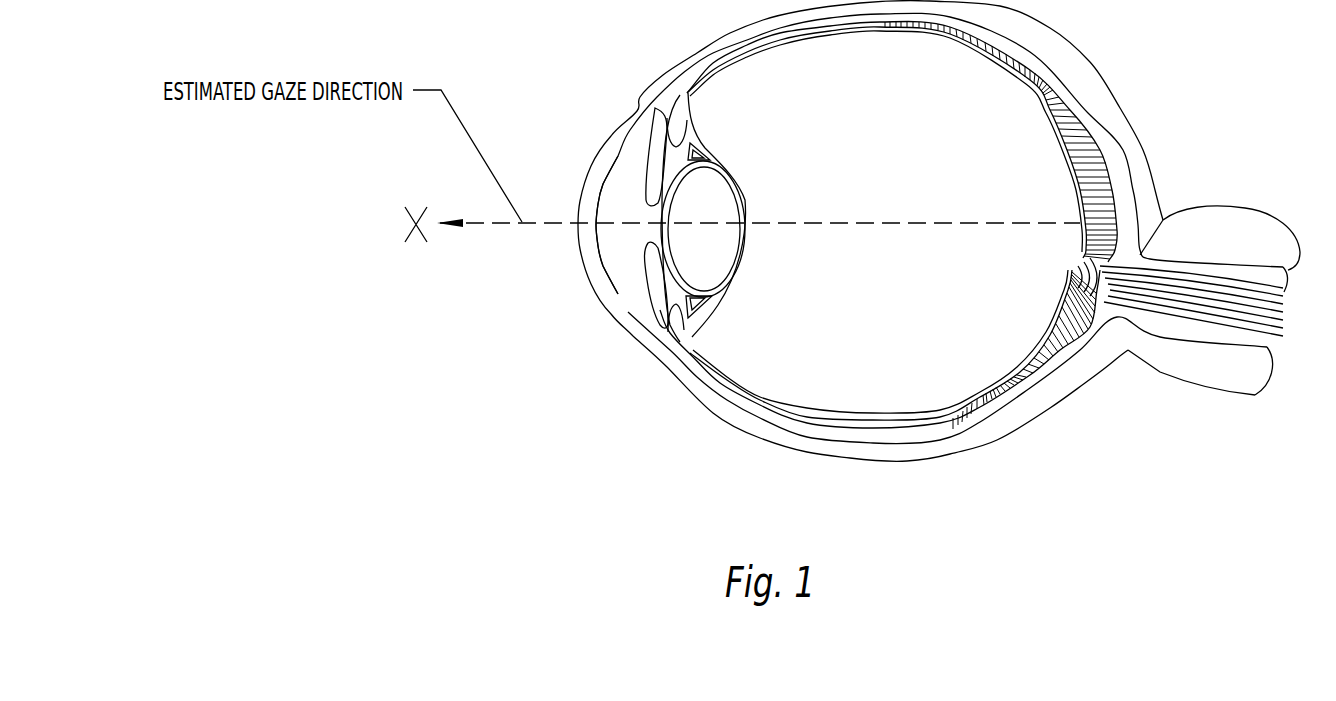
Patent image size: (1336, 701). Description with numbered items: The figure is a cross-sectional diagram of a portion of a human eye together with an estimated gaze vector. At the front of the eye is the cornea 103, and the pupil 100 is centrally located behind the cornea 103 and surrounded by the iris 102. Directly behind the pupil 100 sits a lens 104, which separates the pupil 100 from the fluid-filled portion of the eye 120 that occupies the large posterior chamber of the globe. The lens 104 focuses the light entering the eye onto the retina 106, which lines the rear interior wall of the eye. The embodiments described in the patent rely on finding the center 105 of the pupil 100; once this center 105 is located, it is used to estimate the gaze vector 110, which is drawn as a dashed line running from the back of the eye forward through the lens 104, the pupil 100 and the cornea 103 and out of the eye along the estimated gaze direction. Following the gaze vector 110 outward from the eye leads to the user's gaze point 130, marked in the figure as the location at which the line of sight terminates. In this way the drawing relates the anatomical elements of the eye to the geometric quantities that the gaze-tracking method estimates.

The pupil 100 is at (665, 212).
The iris 102 is at (647, 158).
The cornea 103 is at (585, 258).
The lens 104 is at (710, 258).
The center of the pupil 105 is at (667, 214).
The retina 106 is at (1045, 125).
The gaze vector 110 is at (855, 221).
The fluid-filled portion of the eye 120 is at (978, 352).
The gaze point 130 is at (410, 222).